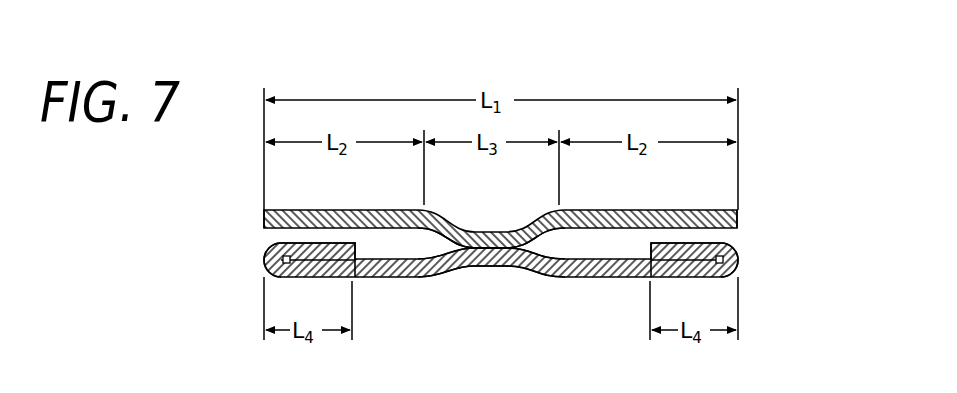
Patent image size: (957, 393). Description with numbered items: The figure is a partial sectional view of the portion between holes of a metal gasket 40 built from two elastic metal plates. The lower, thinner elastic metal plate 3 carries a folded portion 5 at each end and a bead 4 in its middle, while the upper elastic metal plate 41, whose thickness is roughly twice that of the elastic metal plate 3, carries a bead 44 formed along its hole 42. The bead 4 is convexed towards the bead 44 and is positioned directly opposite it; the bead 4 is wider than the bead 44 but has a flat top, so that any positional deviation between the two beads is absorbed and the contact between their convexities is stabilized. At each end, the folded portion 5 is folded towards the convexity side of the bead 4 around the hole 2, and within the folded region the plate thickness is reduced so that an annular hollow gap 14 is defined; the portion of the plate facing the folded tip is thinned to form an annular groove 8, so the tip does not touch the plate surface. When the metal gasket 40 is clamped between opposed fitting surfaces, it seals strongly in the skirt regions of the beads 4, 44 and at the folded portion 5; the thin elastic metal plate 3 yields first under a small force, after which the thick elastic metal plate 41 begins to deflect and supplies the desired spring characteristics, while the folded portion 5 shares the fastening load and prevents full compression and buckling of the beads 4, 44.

The hole 2 is at (267, 257).
The elastic metal plate 3 is at (607, 279).
The bead 4 is at (513, 267).
The folded portion 5 is at (303, 242).
The annular groove 8 is at (366, 279).
The gap 14 is at (267, 267).
The metal gasket 40 is at (462, 276).
The elastic metal plate 41 is at (656, 211).
The hole 42 is at (264, 212).
The bead 44 is at (479, 234).